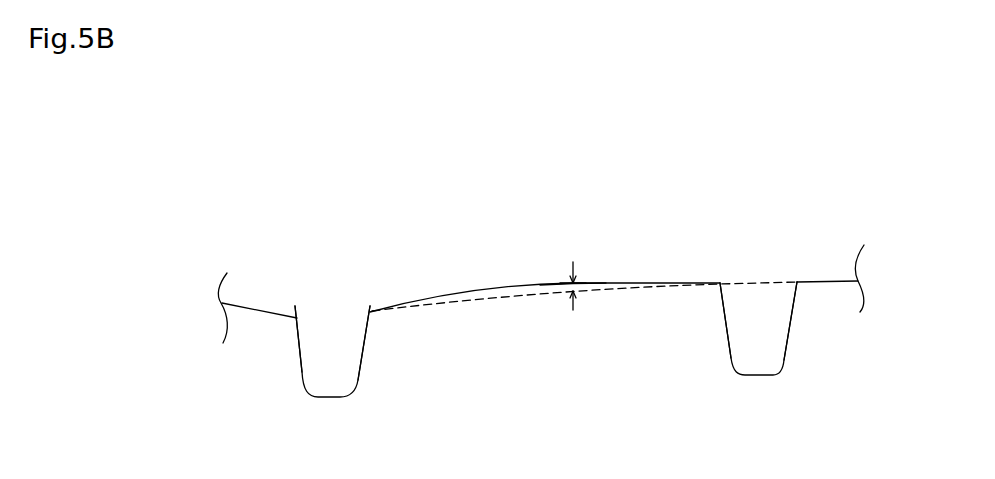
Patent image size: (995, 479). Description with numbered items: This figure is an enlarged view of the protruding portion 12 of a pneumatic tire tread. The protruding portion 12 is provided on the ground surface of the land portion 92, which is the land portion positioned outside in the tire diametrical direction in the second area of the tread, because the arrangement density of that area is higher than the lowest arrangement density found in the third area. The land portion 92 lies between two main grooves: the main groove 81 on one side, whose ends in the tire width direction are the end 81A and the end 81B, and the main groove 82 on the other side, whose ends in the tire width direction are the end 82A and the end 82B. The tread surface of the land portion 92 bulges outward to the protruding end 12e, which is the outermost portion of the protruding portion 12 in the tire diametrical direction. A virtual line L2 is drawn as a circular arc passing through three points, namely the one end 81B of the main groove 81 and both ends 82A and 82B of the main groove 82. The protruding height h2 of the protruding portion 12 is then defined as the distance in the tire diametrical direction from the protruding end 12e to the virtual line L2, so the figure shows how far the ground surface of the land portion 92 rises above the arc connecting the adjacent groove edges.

The protruding portion 12 is at (623, 282).
The protruding end 12e is at (572, 282).
The main groove 81 is at (327, 333).
The end of the main groove 81 in the tire width direction 81A is at (295, 308).
The end of the main groove 81 in the tire width direction 81B is at (367, 308).
The main groove 82 is at (758, 317).
The end of the main groove 82 in the tire width direction 82A is at (720, 282).
The end of the main groove 82 in the tire width direction 82B is at (797, 282).
The land portion 92 is at (575, 245).
The virtual line L2 is at (543, 295).
The protruding height h2 is at (577, 291).